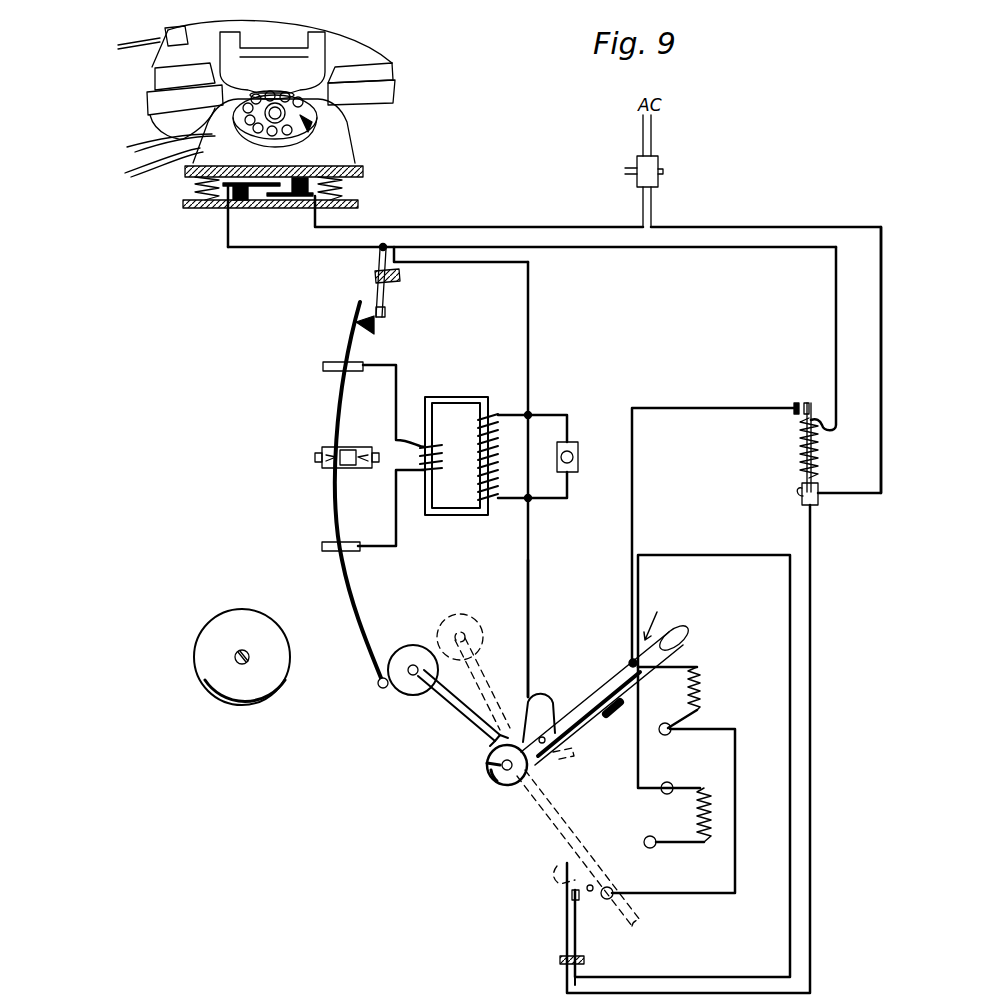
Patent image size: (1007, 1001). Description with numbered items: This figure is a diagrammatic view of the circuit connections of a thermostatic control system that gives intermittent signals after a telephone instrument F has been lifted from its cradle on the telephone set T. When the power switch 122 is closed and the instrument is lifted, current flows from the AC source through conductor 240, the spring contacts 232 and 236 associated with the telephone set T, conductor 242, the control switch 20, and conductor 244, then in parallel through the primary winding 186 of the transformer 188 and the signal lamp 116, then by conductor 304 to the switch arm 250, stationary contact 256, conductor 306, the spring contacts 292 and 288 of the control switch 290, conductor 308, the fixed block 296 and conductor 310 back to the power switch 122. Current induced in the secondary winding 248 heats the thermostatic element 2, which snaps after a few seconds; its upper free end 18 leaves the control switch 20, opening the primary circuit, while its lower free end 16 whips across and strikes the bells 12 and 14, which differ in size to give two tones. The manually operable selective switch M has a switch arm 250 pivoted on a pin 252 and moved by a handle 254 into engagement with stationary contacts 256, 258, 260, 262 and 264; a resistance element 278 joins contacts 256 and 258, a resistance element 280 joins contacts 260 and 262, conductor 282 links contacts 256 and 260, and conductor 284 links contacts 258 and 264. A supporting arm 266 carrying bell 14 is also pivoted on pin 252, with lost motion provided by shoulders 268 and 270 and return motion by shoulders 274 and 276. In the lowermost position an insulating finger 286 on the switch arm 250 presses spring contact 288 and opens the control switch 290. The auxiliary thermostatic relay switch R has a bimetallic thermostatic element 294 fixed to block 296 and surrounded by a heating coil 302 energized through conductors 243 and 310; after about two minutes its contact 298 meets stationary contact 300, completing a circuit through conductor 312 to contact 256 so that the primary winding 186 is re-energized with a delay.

The telephone instrument F is at (267, 74).
The telephone set T is at (265, 149).
The spring contact 236 is at (238, 207).
The spring contact 232 is at (248, 231).
The conductor 242 is at (532, 263).
The conductor 240 is at (598, 344).
The conductor 243 is at (490, 262).
The conductor 244 is at (566, 479).
The control switch 20 is at (413, 283).
The free end of thermostatic element 18 is at (337, 325).
The power switch 122 is at (673, 171).
The transformer 188 is at (456, 435).
The primary winding 186 is at (522, 457).
The secondary winding 248 is at (382, 456).
The signal lamp 116 is at (590, 447).
The thermostatic element 2 is at (337, 434).
The lower free end of thermostatic element 16 is at (372, 495).
The bell 12 is at (242, 672).
The bell 14 is at (425, 670).
The supporting arm 266 is at (455, 712).
The shoulder 276 is at (490, 748).
The pin 252 is at (505, 785).
The shoulder 268 is at (494, 778).
The shoulder 270 is at (486, 768).
The shoulder 274 is at (525, 735).
The switch arm 250 is at (585, 708).
The handle 254 is at (690, 643).
The selective switch M is at (657, 617).
The stationary contact 256 is at (628, 662).
The insulating finger 286 is at (610, 716).
The conductor 312 is at (705, 407).
The stationary contact 300 is at (792, 405).
The contact 298 is at (806, 402).
The bimetallic thermostatic element 294 is at (815, 408).
The thermostatic relay switch R is at (818, 458).
The heating coil 302 is at (800, 448).
The fixed base or block 296 is at (800, 500).
The conductor 310 is at (880, 333).
The conductor 308 is at (812, 822).
The conductor 306 is at (705, 555).
The conductor 304 is at (528, 568).
The conductor 282 is at (636, 770).
The resistance element 278 is at (703, 695).
The stationary contact 258 is at (670, 734).
The conductor 284 is at (737, 800).
The stationary contact 260 is at (672, 784).
The resistance element 280 is at (695, 818).
The stationary contact 262 is at (653, 848).
The stationary contact 264 is at (609, 886).
The spring contact 288 is at (565, 931).
The spring contact 292 is at (580, 950).
The control switch 290 is at (544, 986).